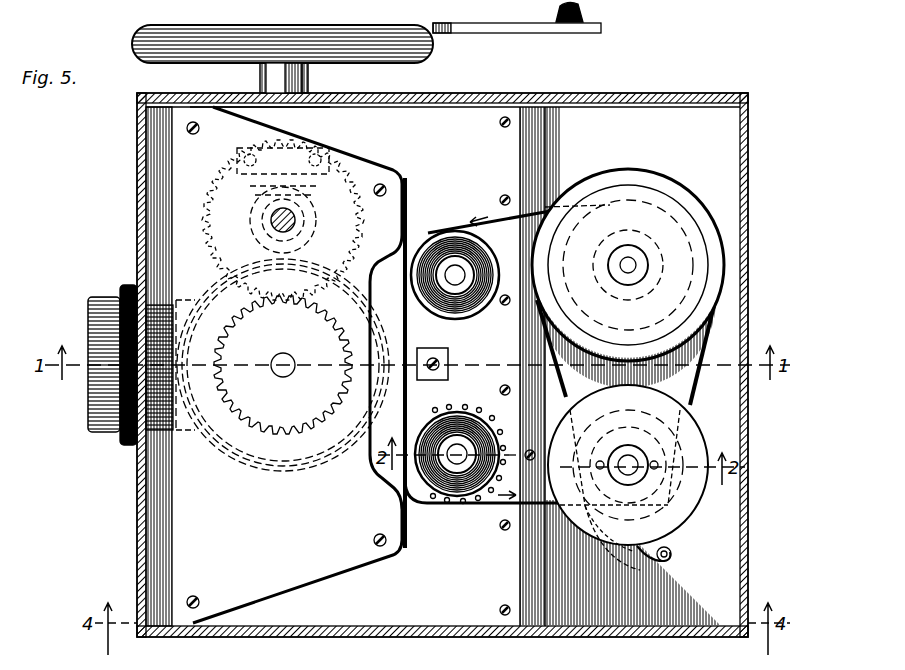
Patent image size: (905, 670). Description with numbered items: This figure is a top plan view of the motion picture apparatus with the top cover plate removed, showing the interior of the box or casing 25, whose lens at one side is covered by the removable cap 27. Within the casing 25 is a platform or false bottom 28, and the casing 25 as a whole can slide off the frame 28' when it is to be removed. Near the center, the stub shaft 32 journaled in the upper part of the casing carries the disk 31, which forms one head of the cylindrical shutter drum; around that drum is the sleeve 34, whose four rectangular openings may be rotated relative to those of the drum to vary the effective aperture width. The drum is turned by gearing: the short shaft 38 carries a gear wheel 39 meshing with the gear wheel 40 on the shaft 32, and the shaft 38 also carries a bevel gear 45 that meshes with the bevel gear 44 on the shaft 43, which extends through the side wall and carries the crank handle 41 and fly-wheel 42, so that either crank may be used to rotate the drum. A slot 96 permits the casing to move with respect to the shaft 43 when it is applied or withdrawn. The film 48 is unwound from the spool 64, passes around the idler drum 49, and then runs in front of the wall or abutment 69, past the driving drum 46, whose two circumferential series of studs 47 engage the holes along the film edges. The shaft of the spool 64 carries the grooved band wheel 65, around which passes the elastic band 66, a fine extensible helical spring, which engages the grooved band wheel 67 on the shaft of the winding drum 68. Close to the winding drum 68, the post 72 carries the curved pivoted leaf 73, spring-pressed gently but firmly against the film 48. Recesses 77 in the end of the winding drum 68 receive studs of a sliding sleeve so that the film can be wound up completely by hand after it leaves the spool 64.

The casing 25 is at (748, 222).
The removable cap 27 is at (98, 326).
The platform 28 is at (459, 576).
The frame 28' is at (378, 603).
The disk 31 is at (378, 322).
The stub shaft 32 is at (283, 377).
The sleeve 34 is at (378, 405).
The shaft 38 is at (295, 222).
The gear wheel 39 is at (360, 165).
The gear wheel 40 is at (242, 430).
The crank handle 41 is at (583, 14).
The fly-wheel 42 is at (393, 60).
The shaft 43 is at (308, 78).
The bevel gear 44 is at (214, 186).
The bevel gear 45 is at (260, 220).
The film driving drum 46 is at (455, 486).
The studs 47 is at (478, 408).
The film 48 is at (620, 366).
The idler drum 49 is at (450, 240).
The unwinding spool 64 is at (652, 212).
The grooved band wheel 65 is at (600, 176).
The elastic band 66 is at (575, 354).
The grooved band wheel 67 is at (690, 512).
The winding drum 68 is at (696, 487).
The abutment 69 is at (410, 338).
The post 72 is at (671, 561).
The curved pivoted leaf 73 is at (608, 546).
The recesses 77 is at (652, 455).
The slot 96 is at (200, 105).